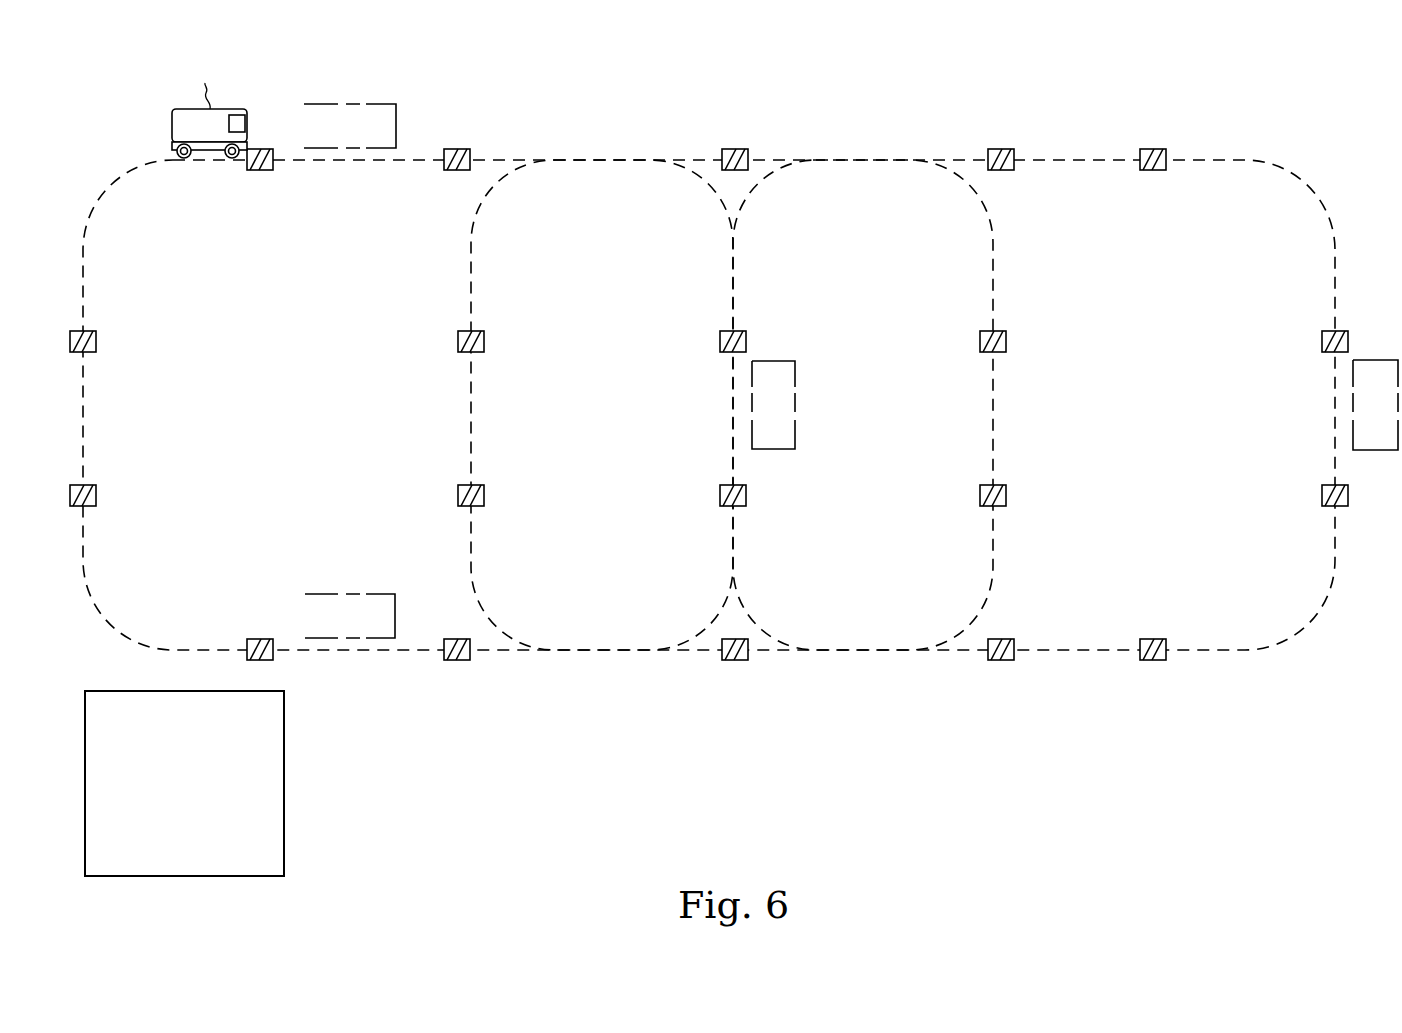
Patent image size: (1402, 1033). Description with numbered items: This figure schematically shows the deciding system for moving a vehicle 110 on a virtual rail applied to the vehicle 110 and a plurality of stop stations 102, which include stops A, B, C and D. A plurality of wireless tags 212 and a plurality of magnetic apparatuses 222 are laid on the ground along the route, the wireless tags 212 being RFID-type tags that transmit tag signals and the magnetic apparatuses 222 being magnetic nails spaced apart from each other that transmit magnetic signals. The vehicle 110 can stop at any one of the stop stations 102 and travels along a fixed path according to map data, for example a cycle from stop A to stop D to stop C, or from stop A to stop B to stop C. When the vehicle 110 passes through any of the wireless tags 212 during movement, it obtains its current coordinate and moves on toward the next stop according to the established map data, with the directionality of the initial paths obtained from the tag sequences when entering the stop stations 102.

The vehicle 110 is at (209, 102).
The stop station 102 is at (105, 705).
The wireless tag 212 is at (250, 170).
The magnetic apparatus 222 is at (105, 844).